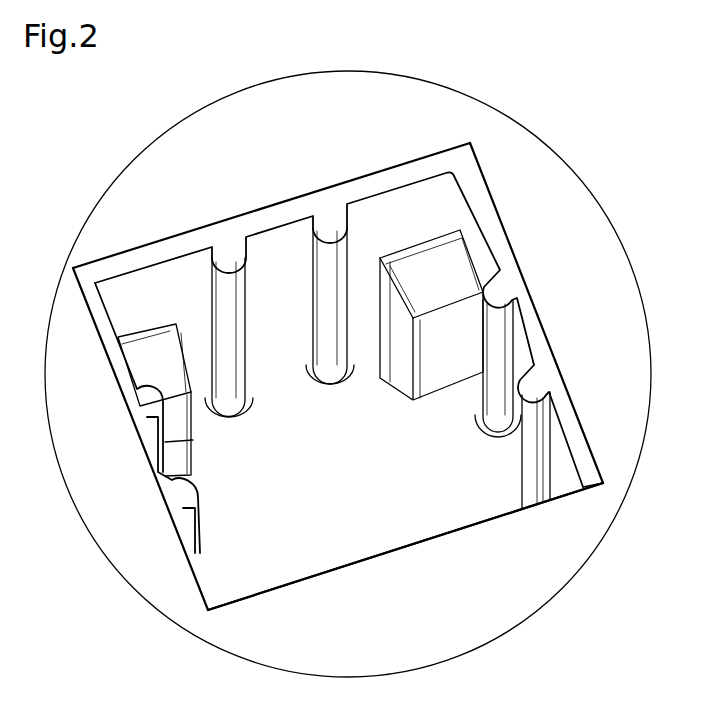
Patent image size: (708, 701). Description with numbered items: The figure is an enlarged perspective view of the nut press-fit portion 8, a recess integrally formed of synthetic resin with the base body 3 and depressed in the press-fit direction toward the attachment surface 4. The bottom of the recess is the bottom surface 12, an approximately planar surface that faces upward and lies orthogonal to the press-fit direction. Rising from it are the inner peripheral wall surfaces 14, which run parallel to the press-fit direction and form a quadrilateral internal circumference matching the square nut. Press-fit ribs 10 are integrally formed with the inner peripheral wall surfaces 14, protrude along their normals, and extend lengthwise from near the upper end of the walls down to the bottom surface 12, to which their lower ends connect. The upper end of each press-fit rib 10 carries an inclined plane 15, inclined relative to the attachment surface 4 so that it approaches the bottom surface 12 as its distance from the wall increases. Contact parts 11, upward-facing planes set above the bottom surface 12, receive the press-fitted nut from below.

The base body 3 is at (117, 170).
The attachment surface 4 is at (585, 258).
The nut press-fit portion 8 is at (392, 522).
The press-fit rib 10 is at (243, 347).
The contact part 11 is at (142, 357).
The bottom surface 12 is at (318, 518).
The inner peripheral wall surface 14 is at (284, 249).
The inclined plane 15 is at (232, 258).